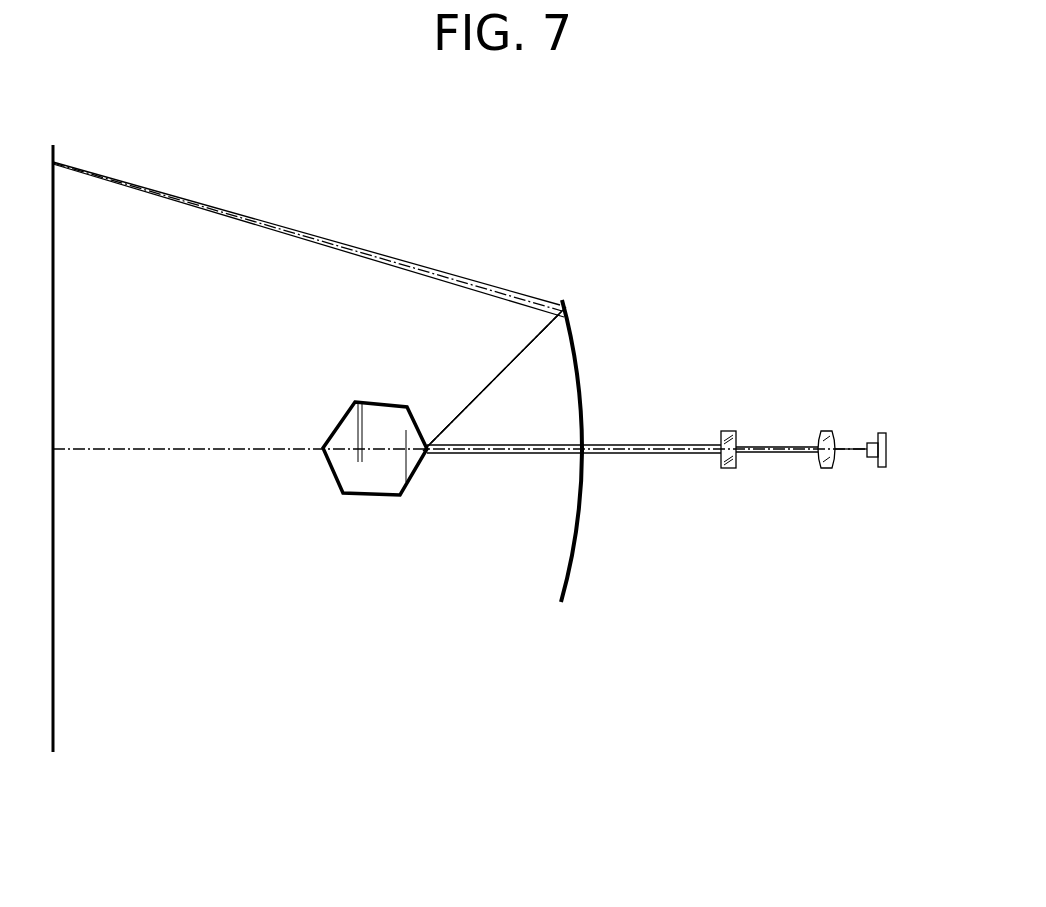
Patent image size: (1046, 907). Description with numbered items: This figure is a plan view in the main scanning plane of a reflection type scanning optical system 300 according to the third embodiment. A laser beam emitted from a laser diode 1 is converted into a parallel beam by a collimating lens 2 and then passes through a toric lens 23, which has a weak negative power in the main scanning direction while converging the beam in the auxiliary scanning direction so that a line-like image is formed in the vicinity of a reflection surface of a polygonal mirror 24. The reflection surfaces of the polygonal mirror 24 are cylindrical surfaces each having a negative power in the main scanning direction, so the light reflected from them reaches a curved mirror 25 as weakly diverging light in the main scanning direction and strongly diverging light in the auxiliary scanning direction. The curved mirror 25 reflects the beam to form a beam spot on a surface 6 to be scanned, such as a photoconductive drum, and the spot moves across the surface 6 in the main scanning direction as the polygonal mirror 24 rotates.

The reflection type scanning optical system 300 is at (684, 149).
The surface to be scanned 6 is at (53, 632).
The curved mirror 25 is at (569, 566).
The polygonal mirror 24 is at (365, 402).
The toric lens 23 is at (725, 470).
The collimating lens 2 is at (824, 470).
The laser diode 1 is at (882, 470).